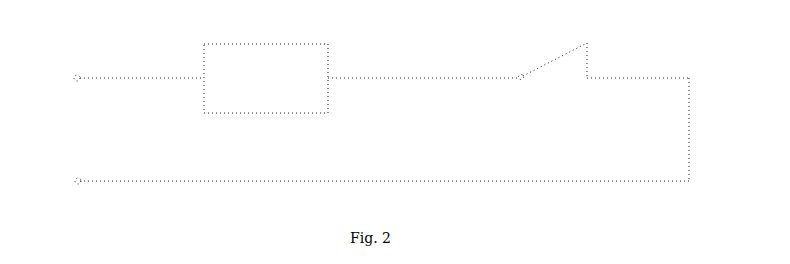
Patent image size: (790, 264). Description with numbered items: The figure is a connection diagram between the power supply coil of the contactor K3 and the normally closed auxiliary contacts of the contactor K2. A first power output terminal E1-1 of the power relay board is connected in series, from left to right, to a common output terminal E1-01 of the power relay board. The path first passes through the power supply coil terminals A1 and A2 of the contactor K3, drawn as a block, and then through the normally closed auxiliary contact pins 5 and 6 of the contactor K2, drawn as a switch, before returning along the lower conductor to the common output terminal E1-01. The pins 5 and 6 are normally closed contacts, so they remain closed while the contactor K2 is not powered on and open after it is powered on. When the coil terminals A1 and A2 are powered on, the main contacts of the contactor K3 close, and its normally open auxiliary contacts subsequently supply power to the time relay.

The first power output terminal E1-1 is at (64, 70).
The power supply coil terminal A1 is at (142, 65).
The contactor K3 is at (266, 78).
The power supply coil terminal A2 is at (423, 64).
The normally closed auxiliary contact pin 5 is at (505, 65).
The contactor K2 is at (555, 44).
The normally closed auxiliary contact pin 6 is at (638, 64).
The common output terminal E1-01 is at (368, 190).